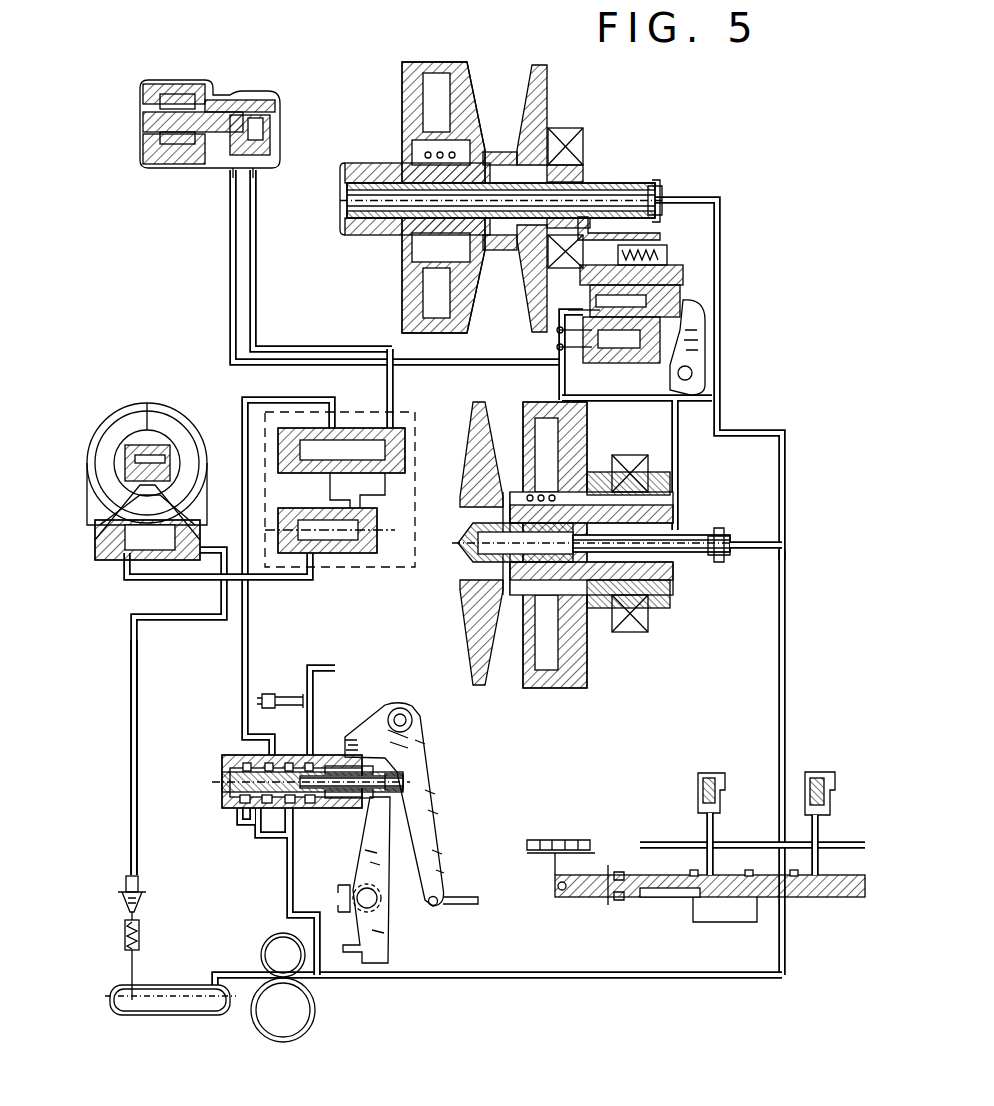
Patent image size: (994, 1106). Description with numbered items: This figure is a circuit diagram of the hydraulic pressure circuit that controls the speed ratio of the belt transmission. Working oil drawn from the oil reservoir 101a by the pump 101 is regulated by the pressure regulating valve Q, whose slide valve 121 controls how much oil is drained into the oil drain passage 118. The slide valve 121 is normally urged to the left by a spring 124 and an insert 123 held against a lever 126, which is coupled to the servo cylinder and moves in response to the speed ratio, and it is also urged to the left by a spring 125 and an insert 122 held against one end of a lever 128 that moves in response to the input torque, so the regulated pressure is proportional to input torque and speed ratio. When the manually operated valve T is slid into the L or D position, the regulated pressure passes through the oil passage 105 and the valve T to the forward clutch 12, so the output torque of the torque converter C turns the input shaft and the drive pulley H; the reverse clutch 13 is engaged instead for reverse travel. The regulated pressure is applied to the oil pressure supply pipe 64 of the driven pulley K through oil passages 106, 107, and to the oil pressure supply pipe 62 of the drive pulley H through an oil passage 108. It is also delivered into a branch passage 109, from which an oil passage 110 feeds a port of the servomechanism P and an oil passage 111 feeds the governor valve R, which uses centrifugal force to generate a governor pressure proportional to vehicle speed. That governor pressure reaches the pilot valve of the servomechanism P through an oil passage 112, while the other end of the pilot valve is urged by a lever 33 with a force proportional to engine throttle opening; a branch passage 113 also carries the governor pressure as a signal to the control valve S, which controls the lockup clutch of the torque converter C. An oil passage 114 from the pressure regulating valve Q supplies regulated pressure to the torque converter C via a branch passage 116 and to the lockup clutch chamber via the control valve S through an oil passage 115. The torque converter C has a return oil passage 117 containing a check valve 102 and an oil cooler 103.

The governor valve R is at (226, 80).
The drive pulley H is at (488, 80).
The oil pressure supply pipe 62 is at (624, 188).
The oil passage 108 is at (722, 208).
The servomechanism P is at (673, 254).
The lever 33 is at (706, 342).
The oil passage 111 is at (229, 268).
The oil passage 112 is at (256, 290).
The branch passage 113 is at (394, 378).
The oil passage 110 is at (567, 355).
The branch passage 109 is at (643, 404).
The torque converter C is at (148, 388).
The oil passage 114 is at (241, 396).
The control valve S is at (418, 426).
The driven pulley K is at (505, 685).
The oil pressure supply pipe 64 is at (693, 532).
The oil passage 107 is at (744, 551).
The branch passage 116 is at (221, 545).
The oil passage 115 is at (284, 581).
The oil drain passage 118 is at (306, 668).
The return oil passage 117 is at (138, 666).
The oil passage 106 is at (787, 664).
The pressure regulating valve Q is at (368, 690).
The spring 125 is at (326, 746).
The insert 122 is at (382, 762).
The insert 123 is at (404, 780).
The slide valve 121 is at (222, 786).
The lever 126 is at (437, 818).
The spring 124 is at (320, 808).
The lever 128 is at (389, 932).
The manually operated valve T is at (624, 856).
The reverse clutch 13 is at (708, 764).
The forward clutch 12 is at (816, 764).
The check valve 102 is at (144, 885).
The oil cooler 103 is at (144, 948).
The oil reservoir 101a is at (180, 1018).
The pump 101 is at (320, 1030).
The oil passage 105 is at (543, 985).